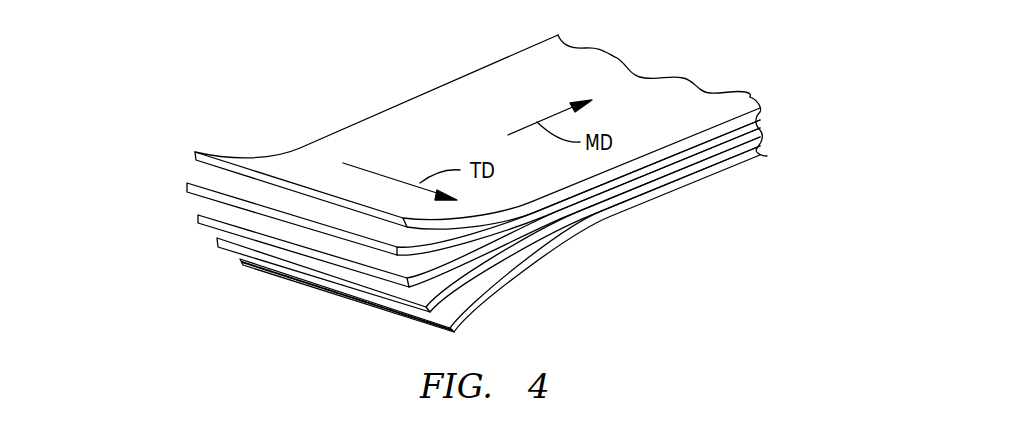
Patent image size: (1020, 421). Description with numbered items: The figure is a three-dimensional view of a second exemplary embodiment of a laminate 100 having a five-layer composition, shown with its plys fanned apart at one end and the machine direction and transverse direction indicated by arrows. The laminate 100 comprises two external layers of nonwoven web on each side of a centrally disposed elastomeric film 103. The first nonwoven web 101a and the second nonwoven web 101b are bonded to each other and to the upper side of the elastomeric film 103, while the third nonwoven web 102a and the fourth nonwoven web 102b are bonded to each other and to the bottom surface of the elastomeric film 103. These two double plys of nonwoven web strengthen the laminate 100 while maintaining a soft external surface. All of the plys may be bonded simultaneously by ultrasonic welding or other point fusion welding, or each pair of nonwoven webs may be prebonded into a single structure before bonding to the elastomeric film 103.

The laminate 100 is at (647, 59).
The first nonwoven web 101a is at (202, 158).
The second nonwoven web 101b is at (248, 183).
The elastomeric film 103 is at (215, 215).
The third nonwoven web 102a is at (217, 238).
The fourth nonwoven web 102b is at (243, 266).